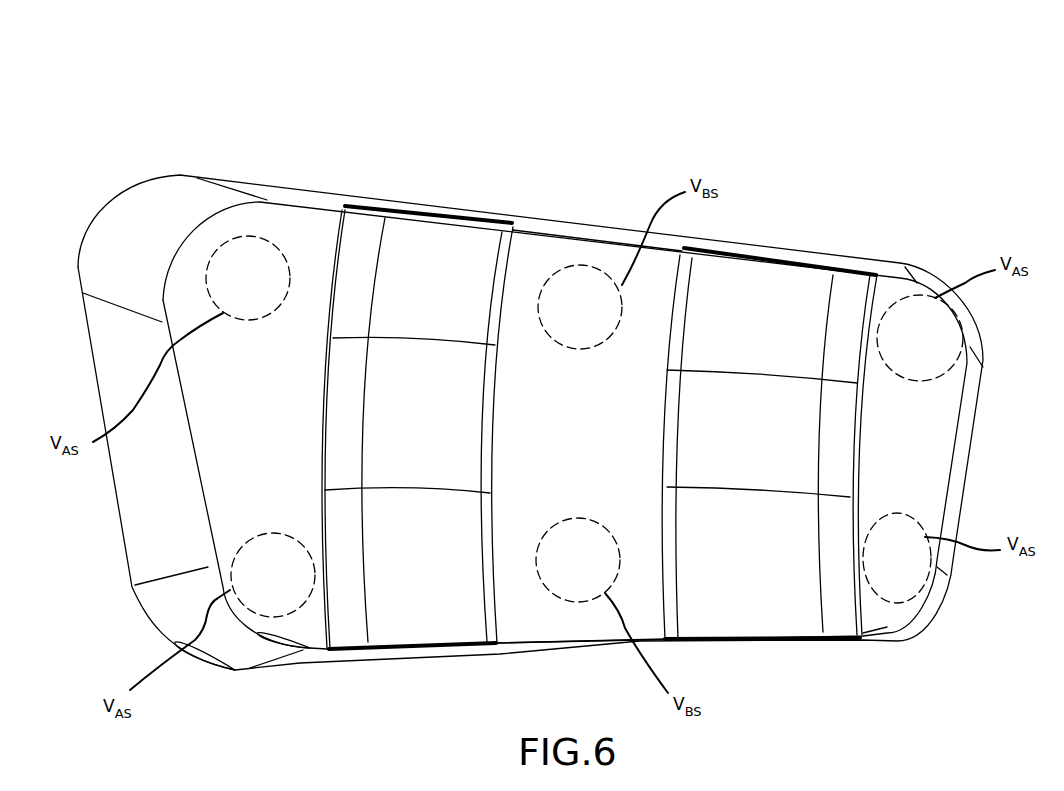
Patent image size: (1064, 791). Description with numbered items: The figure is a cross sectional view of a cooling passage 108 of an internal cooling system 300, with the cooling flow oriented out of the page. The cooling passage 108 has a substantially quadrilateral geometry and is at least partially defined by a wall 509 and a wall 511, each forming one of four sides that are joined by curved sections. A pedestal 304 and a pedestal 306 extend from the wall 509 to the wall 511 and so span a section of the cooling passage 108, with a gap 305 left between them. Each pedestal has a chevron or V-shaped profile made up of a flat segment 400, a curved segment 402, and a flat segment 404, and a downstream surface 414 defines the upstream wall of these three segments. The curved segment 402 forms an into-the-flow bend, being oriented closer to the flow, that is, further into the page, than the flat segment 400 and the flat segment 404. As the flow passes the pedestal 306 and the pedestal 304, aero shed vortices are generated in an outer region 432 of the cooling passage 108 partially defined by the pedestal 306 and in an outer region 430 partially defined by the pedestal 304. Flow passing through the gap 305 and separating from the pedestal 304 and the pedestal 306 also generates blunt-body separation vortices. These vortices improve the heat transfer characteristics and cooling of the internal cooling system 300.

The internal cooling system 300 is at (229, 115).
The cooling passage 108 is at (578, 297).
The pedestal 304 is at (840, 618).
The gap 305 is at (620, 470).
The pedestal 306 is at (348, 627).
The flat segment 400 is at (497, 598).
The curved segment 402 is at (378, 402).
The flat segment 404 is at (405, 245).
The downstream surface 414 is at (457, 438).
The outer region 430 is at (927, 450).
The outer region 432 is at (222, 488).
The wall 509 is at (595, 250).
The wall 511 is at (557, 640).